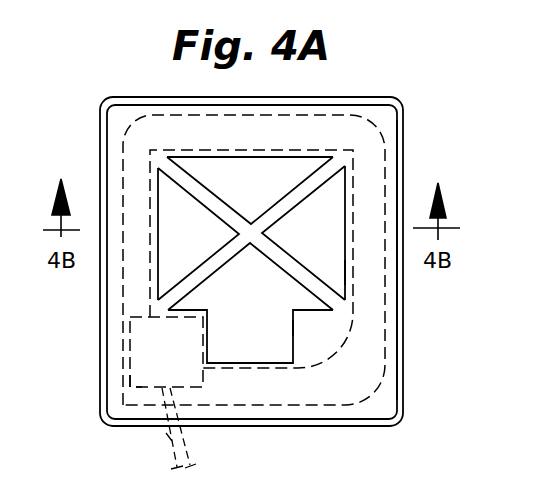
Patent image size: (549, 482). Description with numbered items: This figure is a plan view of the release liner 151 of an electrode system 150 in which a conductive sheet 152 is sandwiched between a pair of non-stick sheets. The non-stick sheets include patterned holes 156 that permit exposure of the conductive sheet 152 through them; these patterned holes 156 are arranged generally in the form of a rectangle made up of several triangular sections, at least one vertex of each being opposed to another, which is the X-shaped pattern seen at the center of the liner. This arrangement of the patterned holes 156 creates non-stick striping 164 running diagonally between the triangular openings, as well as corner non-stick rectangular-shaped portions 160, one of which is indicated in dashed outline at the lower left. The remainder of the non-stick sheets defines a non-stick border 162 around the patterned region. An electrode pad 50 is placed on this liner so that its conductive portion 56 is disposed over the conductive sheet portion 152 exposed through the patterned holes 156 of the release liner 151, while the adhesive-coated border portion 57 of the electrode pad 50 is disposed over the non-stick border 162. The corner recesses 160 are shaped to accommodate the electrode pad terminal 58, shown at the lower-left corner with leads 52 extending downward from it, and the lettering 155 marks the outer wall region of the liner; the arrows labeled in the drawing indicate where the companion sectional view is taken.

The electrode pad 50 is at (377, 119).
The leads 52 is at (162, 468).
The conductive portion 56 is at (307, 146).
The adhesive-coated border portion 57 is at (265, 143).
The electrode pad terminal 58 is at (130, 375).
The electrode system 150 is at (329, 86).
The release liner 151 is at (183, 98).
The conductive sheet 152 is at (332, 236).
The side wall 155 is at (400, 140).
The patterned holes 156 is at (295, 328).
The corner non-stick rectangular-shaped portions 160 is at (183, 315).
The non-stick border 162 is at (380, 390).
The non-stick striping 164 is at (322, 190).